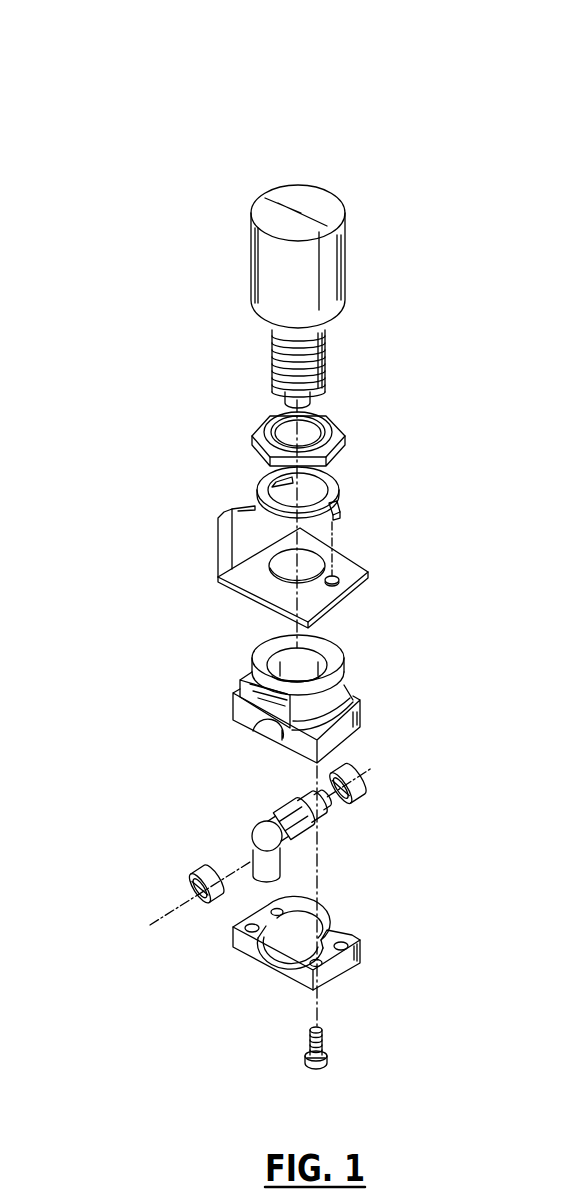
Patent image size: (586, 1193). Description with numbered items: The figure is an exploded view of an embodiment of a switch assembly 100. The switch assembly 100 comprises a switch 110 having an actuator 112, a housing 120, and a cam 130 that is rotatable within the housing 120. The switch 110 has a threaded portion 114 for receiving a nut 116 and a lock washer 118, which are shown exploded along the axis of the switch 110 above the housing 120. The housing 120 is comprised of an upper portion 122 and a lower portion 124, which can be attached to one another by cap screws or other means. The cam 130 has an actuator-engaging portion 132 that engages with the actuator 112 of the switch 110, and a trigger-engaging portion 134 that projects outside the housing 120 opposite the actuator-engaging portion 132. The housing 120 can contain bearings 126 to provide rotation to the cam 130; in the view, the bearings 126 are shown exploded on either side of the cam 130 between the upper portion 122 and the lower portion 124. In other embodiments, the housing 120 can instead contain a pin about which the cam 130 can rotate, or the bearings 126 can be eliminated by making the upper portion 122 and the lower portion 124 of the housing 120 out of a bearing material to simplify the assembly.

The switch assembly 100 is at (314, 138).
The switch 110 is at (250, 268).
The actuator 112 is at (282, 402).
The threaded portion 114 is at (326, 362).
The nut 116 is at (338, 420).
The lock washer 118 is at (338, 487).
The housing 120 is at (295, 837).
The upper portion 122 is at (235, 693).
The lower portion 124 is at (248, 960).
The bearings 126 is at (365, 795).
The cam 130 is at (236, 827).
The actuator-engaging portion 132 is at (280, 790).
The trigger-engaging portion 134 is at (278, 882).